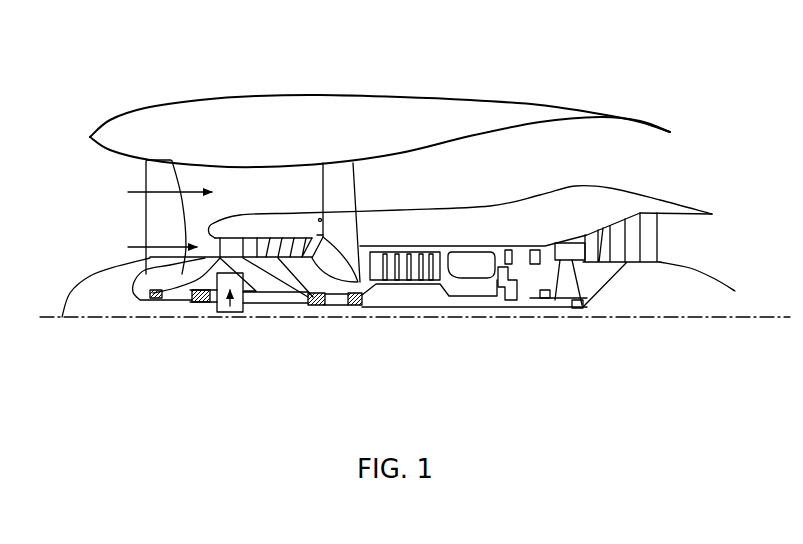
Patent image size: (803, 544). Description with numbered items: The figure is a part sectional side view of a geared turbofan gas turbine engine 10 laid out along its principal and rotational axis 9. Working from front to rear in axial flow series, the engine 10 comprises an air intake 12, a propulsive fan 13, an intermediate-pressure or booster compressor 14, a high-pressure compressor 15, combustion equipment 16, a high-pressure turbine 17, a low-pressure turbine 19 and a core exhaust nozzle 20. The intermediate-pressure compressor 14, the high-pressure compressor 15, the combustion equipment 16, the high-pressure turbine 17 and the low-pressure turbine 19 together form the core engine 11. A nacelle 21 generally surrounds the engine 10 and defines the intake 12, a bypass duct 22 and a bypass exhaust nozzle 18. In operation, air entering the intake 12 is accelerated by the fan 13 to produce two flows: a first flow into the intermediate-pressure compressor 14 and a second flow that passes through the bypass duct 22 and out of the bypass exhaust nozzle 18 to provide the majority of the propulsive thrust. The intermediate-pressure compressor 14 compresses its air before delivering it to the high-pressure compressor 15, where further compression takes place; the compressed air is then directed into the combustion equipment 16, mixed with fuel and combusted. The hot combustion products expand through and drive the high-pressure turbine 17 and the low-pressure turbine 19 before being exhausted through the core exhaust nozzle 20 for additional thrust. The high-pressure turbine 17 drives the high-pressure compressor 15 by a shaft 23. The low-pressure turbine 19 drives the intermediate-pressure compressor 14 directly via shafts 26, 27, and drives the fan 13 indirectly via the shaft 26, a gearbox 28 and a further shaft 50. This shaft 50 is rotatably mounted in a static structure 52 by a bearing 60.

The principal and rotational axis 9 is at (628, 317).
The geared turbofan gas turbine engine 10 is at (128, 110).
The core engine 11 is at (466, 234).
The air intake 12 is at (108, 163).
The propulsive fan 13 is at (157, 220).
The intermediate-pressure compressor 14 is at (285, 246).
The high-pressure compressor 15 is at (408, 260).
The combustion equipment 16 is at (473, 270).
The high-pressure turbine 17 is at (523, 253).
The bypass exhaust nozzle 18 is at (648, 149).
The low-pressure turbine 19 is at (633, 228).
The core exhaust nozzle 20 is at (695, 241).
The nacelle 21 is at (355, 107).
The bypass duct 22 is at (561, 167).
The shaft 23 is at (482, 283).
The shaft 26 is at (400, 312).
The shaft 27 is at (282, 277).
The gearbox 28 is at (227, 310).
The shaft 50 is at (170, 303).
The static structure 52 is at (150, 270).
The bearing 60 is at (203, 305).